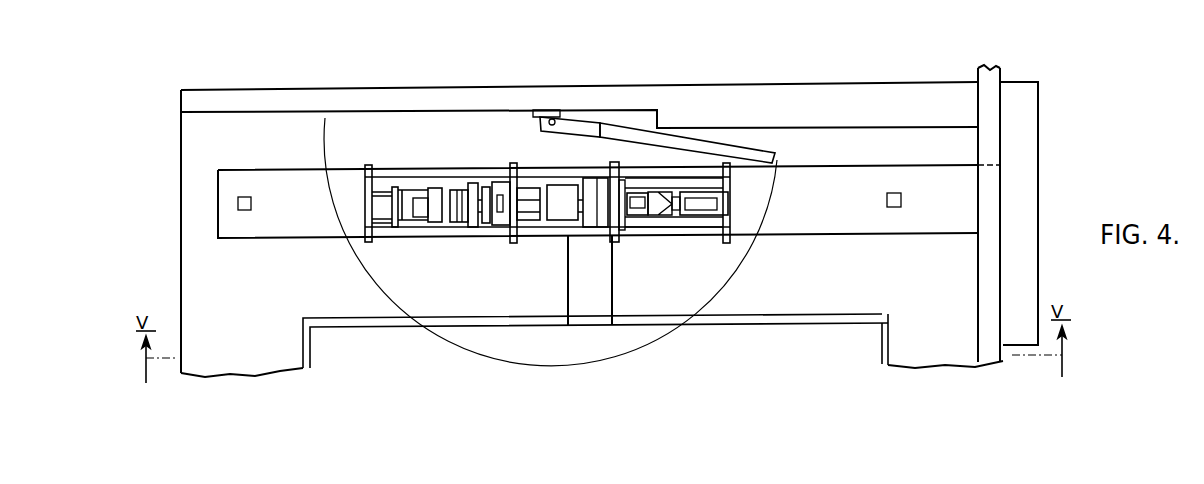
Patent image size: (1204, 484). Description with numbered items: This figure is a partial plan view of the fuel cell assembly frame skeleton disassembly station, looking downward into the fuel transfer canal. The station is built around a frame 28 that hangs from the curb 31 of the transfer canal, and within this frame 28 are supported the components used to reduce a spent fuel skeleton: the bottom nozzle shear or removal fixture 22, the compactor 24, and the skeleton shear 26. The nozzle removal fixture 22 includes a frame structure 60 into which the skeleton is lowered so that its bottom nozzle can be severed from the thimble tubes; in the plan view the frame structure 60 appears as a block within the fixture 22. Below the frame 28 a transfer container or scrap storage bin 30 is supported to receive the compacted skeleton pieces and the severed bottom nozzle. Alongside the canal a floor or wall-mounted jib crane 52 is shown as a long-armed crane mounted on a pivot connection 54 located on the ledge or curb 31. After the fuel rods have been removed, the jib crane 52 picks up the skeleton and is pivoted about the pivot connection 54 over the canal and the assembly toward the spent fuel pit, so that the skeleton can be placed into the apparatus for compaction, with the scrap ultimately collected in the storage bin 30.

The nozzle shear or removal fixture 22 is at (422, 205).
The compactor 24 is at (697, 215).
The skeleton shear 26 is at (647, 218).
The frame 28 is at (728, 238).
The transfer container or scrap storage bin 30 is at (561, 210).
The curb 31 is at (434, 95).
The jib crane 52 is at (755, 150).
The pivot connection 54 is at (553, 120).
The frame structure 60 is at (438, 187).